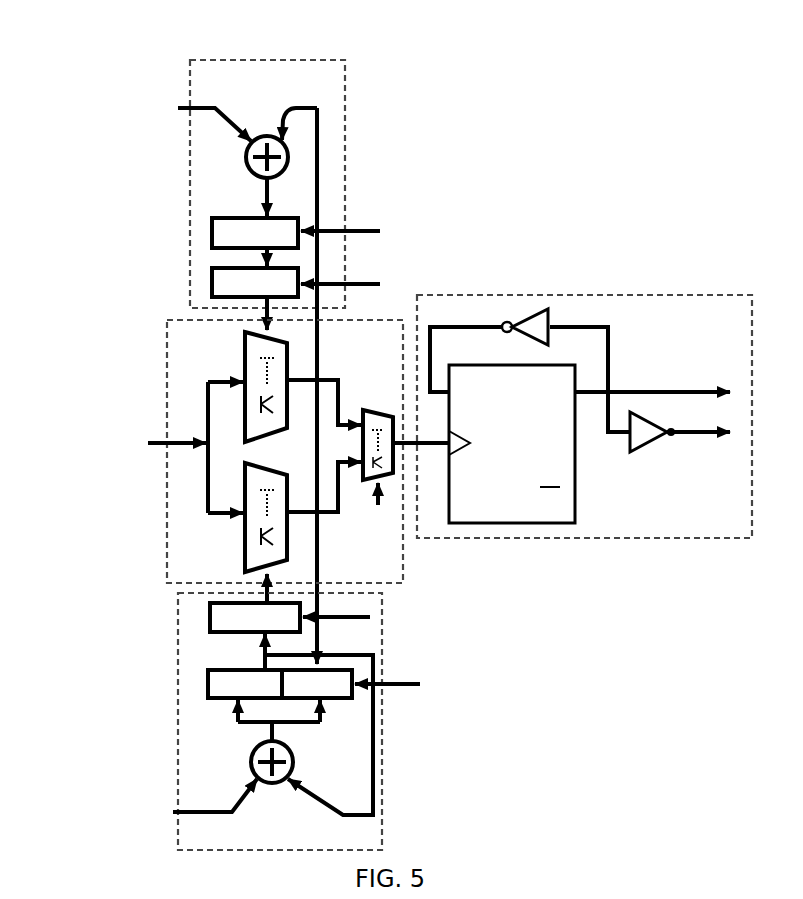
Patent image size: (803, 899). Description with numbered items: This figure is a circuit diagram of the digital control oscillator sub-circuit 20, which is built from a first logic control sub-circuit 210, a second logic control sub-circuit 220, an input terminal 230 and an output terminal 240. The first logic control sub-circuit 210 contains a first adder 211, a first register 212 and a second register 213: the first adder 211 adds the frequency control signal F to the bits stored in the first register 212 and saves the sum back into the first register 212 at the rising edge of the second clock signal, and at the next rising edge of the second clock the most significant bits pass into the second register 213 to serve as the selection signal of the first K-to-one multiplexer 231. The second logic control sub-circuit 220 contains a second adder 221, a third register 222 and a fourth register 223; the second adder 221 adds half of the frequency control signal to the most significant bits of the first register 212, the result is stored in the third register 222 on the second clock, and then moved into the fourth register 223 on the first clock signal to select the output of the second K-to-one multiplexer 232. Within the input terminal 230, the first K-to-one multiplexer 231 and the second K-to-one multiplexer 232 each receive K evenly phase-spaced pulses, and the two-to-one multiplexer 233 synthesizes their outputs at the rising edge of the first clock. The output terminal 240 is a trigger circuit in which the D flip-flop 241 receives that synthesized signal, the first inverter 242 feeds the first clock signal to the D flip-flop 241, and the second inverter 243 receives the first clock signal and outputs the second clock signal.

The digital control oscillator sub-circuit 20 is at (541, 70).
The first logic control sub-circuit 210 is at (384, 818).
The first adder 211 is at (294, 757).
The first register 212 is at (208, 685).
The second register 213 is at (210, 613).
The second logic control sub-circuit 220 is at (268, 60).
The second adder 221 is at (292, 158).
The third register 222 is at (292, 216).
The fourth register 223 is at (212, 270).
The input terminal 230 is at (167, 340).
The first K→1 multiplexer 231 is at (243, 540).
The second K→1 multiplexer 232 is at (289, 370).
The 2→1 multiplexer 233 is at (383, 410).
The output terminal 240 is at (665, 295).
The D flip-flop 241 is at (576, 498).
The first inverter 242 is at (547, 312).
The second inverter 243 is at (658, 448).